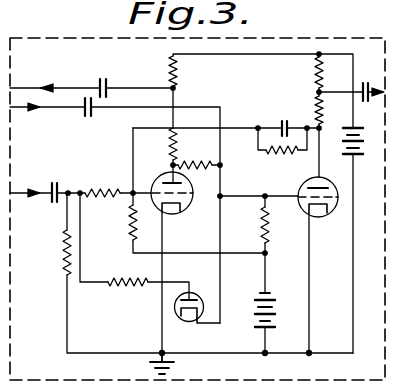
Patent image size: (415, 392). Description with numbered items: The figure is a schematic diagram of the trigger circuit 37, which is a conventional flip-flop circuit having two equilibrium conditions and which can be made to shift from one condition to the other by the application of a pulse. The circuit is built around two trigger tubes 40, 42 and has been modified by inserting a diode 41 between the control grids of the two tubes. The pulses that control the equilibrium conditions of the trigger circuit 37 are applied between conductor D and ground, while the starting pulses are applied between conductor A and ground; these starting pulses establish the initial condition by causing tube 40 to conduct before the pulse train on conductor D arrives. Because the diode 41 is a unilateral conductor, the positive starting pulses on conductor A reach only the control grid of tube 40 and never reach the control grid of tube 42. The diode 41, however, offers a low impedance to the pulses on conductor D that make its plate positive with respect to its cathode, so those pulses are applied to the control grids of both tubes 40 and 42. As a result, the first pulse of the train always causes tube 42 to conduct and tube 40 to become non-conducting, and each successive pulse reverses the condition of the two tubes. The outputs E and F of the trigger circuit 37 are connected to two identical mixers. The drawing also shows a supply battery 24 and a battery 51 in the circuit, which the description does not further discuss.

The trigger circuit 37 is at (330, 37).
The output F is at (58, 86).
The conductor A is at (55, 109).
The conductor D is at (22, 191).
The output E is at (375, 90).
The trigger tube 42 is at (188, 214).
The trigger tube 40 is at (297, 190).
The diode 41 is at (181, 322).
The plate supply battery 24 is at (361, 147).
The bias battery 51 is at (275, 305).